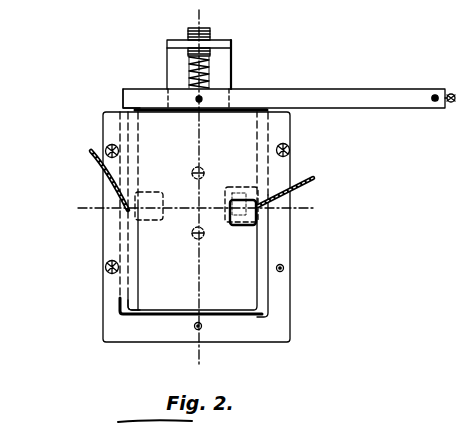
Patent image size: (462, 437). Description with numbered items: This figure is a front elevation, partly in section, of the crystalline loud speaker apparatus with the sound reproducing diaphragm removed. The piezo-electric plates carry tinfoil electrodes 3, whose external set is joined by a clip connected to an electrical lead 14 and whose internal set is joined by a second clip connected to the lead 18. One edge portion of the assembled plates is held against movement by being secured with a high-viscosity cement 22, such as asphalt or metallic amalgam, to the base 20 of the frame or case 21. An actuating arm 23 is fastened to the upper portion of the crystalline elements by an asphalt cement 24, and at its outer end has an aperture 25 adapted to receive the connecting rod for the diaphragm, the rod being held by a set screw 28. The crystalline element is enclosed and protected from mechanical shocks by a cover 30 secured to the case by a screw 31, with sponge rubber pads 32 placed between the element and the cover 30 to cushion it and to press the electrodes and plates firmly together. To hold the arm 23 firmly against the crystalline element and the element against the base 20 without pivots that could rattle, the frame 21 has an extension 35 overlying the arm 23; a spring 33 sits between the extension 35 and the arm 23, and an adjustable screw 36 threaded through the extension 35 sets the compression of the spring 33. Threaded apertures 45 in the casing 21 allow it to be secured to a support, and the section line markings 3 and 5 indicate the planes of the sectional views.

The electrode 3 is at (215, 5).
The section line 5- 5 is at (78, 226).
The electrical lead 14 is at (90, 151).
The lead 18 is at (244, 198).
The base 20 is at (196, 240).
The frame or case 21 is at (232, 208).
The cement 22 is at (140, 318).
The actuating arm 23 is at (324, 89).
The asphalt cement 24 is at (132, 110).
The aperture 25 is at (434, 103).
The set screw 28 is at (451, 93).
The cover 30 is at (249, 134).
The screw 31 is at (113, 145).
The sponge rubber pads 32 is at (263, 285).
The spring 33 is at (183, 71).
The extension 35 is at (233, 43).
The adjustable screw 36 is at (188, 32).
The threaded apertures 45 is at (214, 192).